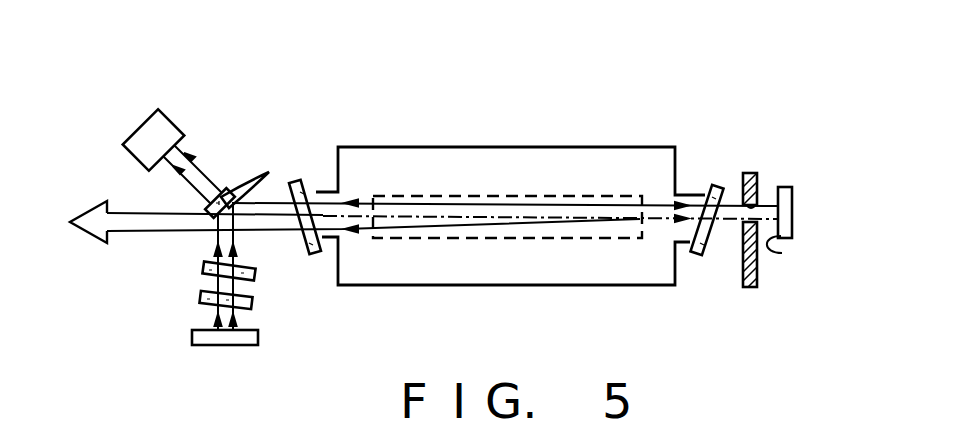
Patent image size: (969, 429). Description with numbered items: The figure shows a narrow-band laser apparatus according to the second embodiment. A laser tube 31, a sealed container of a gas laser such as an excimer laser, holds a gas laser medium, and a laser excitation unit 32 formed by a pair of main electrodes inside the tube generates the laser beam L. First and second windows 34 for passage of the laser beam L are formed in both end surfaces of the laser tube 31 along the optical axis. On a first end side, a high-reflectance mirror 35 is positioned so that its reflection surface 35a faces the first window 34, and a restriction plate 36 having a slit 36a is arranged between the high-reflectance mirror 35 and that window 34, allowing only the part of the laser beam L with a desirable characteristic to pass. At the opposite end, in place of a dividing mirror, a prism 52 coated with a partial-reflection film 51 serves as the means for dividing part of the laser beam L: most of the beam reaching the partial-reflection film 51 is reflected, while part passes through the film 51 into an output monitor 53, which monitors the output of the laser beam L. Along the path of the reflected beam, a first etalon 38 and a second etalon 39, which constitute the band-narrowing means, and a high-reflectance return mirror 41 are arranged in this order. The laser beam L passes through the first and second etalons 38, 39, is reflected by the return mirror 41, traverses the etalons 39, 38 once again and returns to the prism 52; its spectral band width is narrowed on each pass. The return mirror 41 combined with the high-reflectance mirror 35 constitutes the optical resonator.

The laser tube 31 is at (413, 147).
The laser excitation unit 32 is at (578, 196).
The windows 34 is at (300, 177).
The high-reflectance mirror 35 is at (793, 206).
The reflection surface 35a is at (782, 253).
The restriction plate 36 is at (758, 270).
The slit 36a is at (764, 200).
The first etalon 38 is at (256, 276).
The second etalon 39 is at (254, 303).
The high-reflectance return mirror 41 is at (240, 346).
The partial-reflection film 51 is at (257, 190).
The prism 52 is at (238, 182).
The output monitor 53 is at (137, 128).
The laser beam L is at (203, 165).